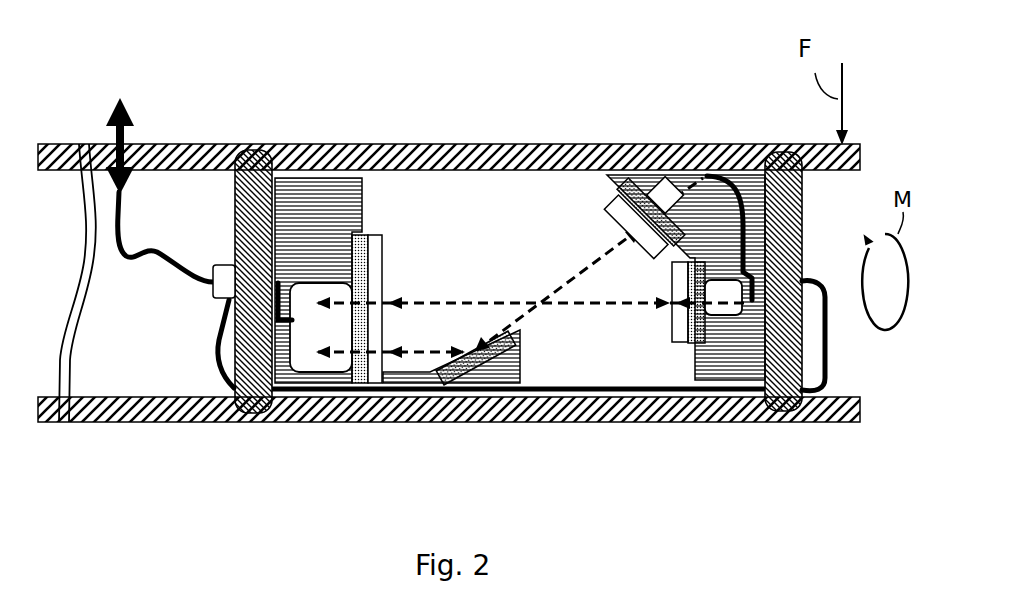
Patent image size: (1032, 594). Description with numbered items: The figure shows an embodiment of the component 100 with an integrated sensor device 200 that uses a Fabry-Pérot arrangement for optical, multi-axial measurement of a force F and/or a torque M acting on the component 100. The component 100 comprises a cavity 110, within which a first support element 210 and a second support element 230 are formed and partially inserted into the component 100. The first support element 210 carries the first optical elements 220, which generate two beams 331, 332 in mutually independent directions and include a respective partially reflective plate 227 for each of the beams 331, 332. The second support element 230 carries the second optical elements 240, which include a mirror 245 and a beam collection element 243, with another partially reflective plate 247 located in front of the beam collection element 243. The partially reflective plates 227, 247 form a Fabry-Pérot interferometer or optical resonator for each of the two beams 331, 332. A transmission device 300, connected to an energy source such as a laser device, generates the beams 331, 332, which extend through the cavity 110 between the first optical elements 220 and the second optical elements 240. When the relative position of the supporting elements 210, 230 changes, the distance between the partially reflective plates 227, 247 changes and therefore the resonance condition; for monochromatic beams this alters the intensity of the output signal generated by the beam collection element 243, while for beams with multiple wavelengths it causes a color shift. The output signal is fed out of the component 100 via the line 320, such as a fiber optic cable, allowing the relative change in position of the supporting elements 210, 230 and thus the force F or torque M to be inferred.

The component 100 is at (142, 66).
The cavity 110 is at (122, 335).
The sensor device 200 is at (796, 491).
The first support element 210 is at (778, 413).
The first optical elements 220 is at (636, 321).
The partially reflective plate 227 is at (688, 345).
The second support element 230 is at (258, 422).
The second optical elements 240 is at (379, 337).
The beam collection element 243 is at (318, 317).
The mirror 245 is at (380, 370).
The partially reflective plate 247 is at (381, 346).
The transmission device 300 is at (538, 82).
The line 320 is at (128, 212).
The beam 331 is at (434, 290).
The beam 332 is at (582, 254).